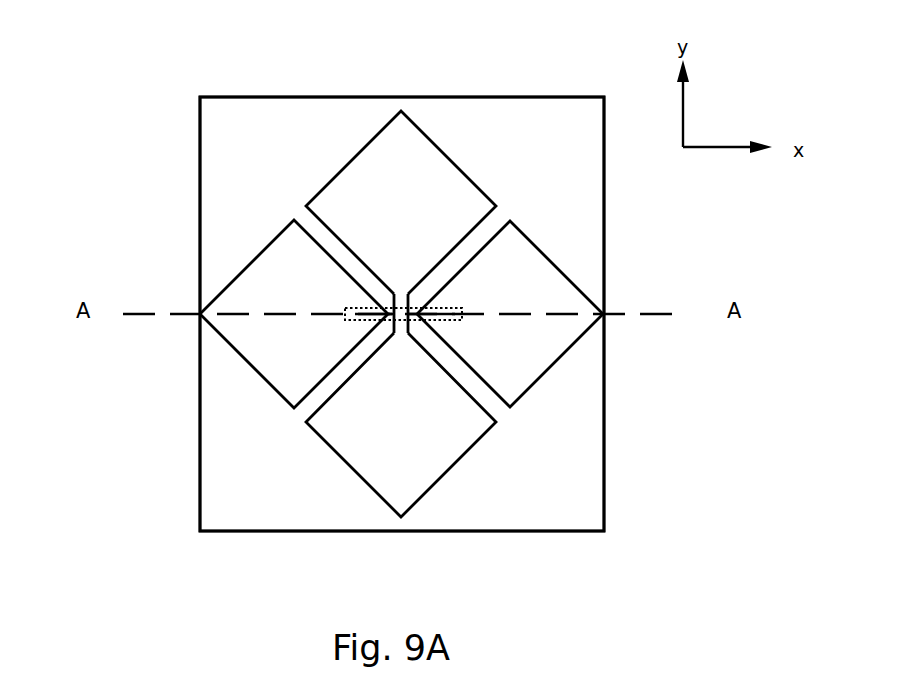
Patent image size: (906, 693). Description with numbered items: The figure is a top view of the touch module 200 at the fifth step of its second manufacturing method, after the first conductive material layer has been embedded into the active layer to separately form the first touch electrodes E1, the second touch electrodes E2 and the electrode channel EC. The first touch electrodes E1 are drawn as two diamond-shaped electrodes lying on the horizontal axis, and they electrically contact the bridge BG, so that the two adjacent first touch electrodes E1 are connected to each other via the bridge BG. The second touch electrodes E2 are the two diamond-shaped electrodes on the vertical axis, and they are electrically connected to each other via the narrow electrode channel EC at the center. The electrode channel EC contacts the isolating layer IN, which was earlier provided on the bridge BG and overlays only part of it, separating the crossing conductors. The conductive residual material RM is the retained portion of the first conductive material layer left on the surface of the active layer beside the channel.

The touch module 200 is at (67, 72).
The first touch electrode E1 is at (243, 300).
The second touch electrode E2 is at (385, 168).
The conductive residual material RM is at (388, 300).
The bridge BG is at (385, 314).
The electrode channel EC is at (401, 305).
The isolating layer IN is at (407, 307).